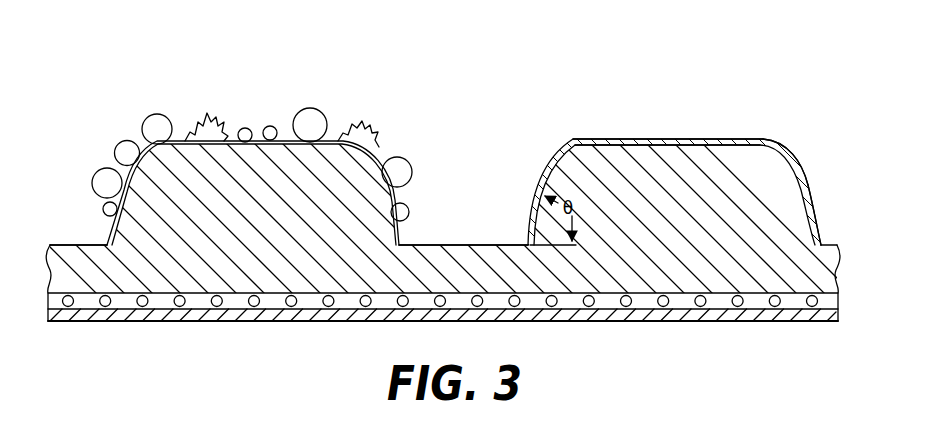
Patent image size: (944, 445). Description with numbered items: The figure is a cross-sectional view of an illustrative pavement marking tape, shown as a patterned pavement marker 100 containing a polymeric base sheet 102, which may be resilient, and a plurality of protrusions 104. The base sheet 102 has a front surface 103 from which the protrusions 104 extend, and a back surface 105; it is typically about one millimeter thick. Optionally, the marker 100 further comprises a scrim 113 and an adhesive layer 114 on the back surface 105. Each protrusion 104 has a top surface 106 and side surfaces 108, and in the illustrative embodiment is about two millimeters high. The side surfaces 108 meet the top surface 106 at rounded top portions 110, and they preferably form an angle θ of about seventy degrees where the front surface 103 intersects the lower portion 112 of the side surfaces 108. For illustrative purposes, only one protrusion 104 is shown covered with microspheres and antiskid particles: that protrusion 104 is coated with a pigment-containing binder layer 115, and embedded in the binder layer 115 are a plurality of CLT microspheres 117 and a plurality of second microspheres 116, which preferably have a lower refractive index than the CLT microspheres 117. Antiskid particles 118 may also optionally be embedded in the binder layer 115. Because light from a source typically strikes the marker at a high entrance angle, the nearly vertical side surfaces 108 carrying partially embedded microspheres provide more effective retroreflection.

The patterned pavement marker 100 is at (746, 137).
The polymeric base sheet 102 is at (540, 284).
The front surface 103 is at (78, 245).
The protrusion 104 is at (237, 173).
The back surface 105 is at (270, 299).
The top surface 106 is at (601, 144).
The side surfaces 108 is at (541, 190).
The rounded top portions 110 is at (795, 158).
The lower portion of side surfaces 112 is at (816, 224).
The scrim 113 is at (67, 306).
The adhesive layer 114 is at (157, 311).
The pigment-containing binder layer 115 is at (632, 139).
The second microspheres 116 is at (158, 122).
The CLT microspheres 117 is at (270, 127).
The antiskid particles 118 is at (212, 123).